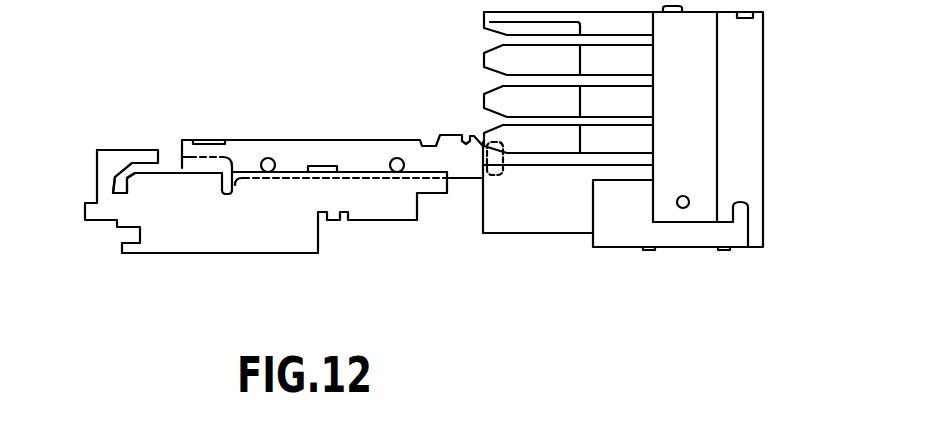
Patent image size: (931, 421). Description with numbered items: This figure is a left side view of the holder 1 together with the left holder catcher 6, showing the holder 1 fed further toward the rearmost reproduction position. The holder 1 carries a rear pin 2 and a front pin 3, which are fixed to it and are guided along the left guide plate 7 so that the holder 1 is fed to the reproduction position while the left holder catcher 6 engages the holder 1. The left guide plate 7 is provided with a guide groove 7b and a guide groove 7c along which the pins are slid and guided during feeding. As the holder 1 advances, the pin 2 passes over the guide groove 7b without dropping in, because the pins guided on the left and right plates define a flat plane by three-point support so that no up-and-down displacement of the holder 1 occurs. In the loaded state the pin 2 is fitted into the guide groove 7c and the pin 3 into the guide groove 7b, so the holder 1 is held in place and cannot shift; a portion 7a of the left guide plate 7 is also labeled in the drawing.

The holder 1 is at (181, 168).
The pin 2 is at (268, 158).
The pin 3 is at (392, 158).
The left holder catcher 6 is at (763, 102).
The left guide plate 7 is at (103, 175).
The upper body portion 7a is at (467, 185).
The guide groove 7b is at (227, 193).
The guide groove 7c is at (117, 187).